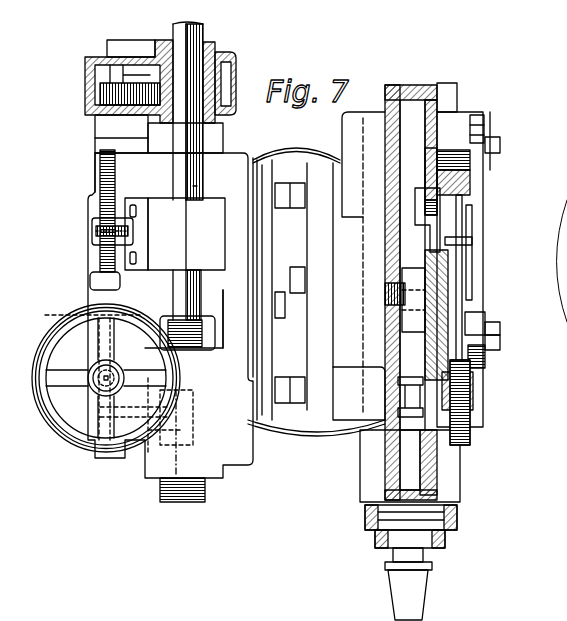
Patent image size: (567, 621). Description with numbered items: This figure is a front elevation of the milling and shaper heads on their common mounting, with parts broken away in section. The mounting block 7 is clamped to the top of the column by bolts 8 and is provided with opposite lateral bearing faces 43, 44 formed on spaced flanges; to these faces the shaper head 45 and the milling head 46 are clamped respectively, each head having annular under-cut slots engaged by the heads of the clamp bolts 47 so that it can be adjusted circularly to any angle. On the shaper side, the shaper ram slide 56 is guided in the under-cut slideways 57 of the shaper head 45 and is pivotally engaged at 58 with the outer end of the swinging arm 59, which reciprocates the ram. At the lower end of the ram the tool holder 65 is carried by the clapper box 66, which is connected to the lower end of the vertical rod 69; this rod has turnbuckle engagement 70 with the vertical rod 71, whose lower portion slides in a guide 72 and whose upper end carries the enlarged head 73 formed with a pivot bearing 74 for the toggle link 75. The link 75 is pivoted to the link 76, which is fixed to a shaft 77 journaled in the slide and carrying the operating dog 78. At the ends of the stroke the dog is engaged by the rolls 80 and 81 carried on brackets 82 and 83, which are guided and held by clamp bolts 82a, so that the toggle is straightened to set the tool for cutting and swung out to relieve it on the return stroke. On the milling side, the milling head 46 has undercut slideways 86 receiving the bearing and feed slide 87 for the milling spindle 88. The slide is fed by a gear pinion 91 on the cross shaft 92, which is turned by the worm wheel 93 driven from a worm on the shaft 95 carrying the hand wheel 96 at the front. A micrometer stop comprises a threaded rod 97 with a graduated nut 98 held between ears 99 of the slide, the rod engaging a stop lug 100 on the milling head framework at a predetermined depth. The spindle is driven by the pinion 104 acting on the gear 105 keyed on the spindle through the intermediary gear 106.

The mounting block 7 is at (258, 415).
The bolts 8 is at (182, 24).
The lateral bearing face 43 is at (316, 348).
The lateral bearing face 44 is at (258, 352).
The shaper head 45 is at (359, 266).
The milling head 46 is at (235, 397).
The clamp bolts 47 is at (281, 290).
The shaper ram slide 56 is at (397, 440).
The under-cut slideways 57 is at (460, 269).
The pivotal engagement 58 is at (387, 289).
The swinging arm 59 is at (412, 332).
The tool holder 65 is at (418, 597).
The clapper box 66 is at (446, 538).
The vertical rod 69 is at (412, 456).
The turnbuckle engagement 70 is at (470, 385).
The vertical rod 71 is at (462, 300).
The guide 72 is at (480, 322).
The enlarged head 73 is at (462, 183).
The pivot bearing 74 is at (458, 162).
The toggle link 75 is at (430, 192).
The toggle link 76 is at (432, 222).
The shaft 77 is at (473, 243).
The operating dog 78 is at (472, 258).
The roll 80 is at (478, 118).
The roll 81 is at (485, 358).
The bracket 82 is at (491, 162).
The clamp bolts 82a is at (500, 145).
The bracket 83 is at (500, 330).
The undercut slideways 86 is at (135, 220).
The bearing and feed slide 87 is at (186, 234).
The milling spindle 88 is at (193, 187).
The gear pinion 91 is at (193, 438).
The cross shaft 92 is at (164, 421).
The worm wheel 93 is at (112, 461).
The shaft 95 is at (111, 372).
The hand wheel 96 is at (71, 440).
The threaded rod 97 is at (100, 184).
The nut 98 is at (93, 232).
The ears 99 is at (130, 231).
The stop lug 100 is at (92, 283).
The pinion 104 is at (118, 92).
The gear 105 is at (218, 92).
The intermediary gear 106 is at (97, 120).